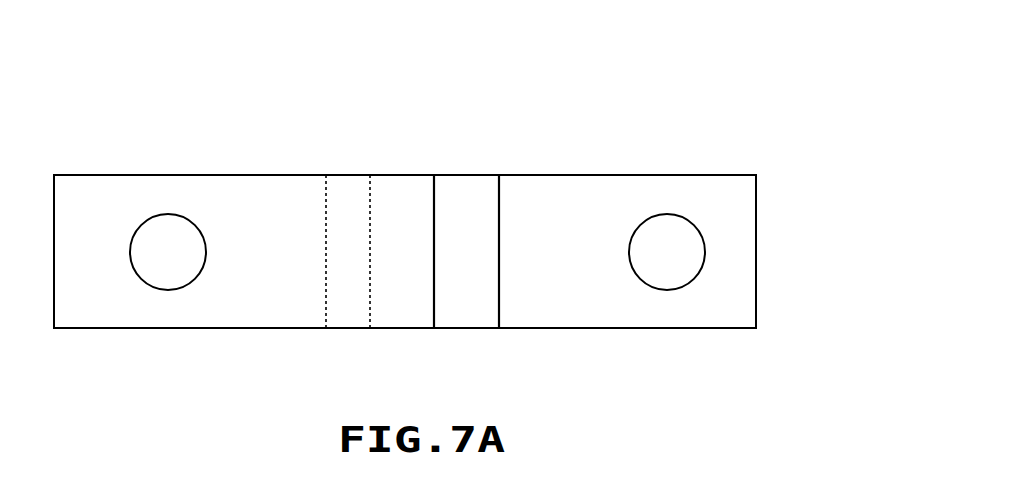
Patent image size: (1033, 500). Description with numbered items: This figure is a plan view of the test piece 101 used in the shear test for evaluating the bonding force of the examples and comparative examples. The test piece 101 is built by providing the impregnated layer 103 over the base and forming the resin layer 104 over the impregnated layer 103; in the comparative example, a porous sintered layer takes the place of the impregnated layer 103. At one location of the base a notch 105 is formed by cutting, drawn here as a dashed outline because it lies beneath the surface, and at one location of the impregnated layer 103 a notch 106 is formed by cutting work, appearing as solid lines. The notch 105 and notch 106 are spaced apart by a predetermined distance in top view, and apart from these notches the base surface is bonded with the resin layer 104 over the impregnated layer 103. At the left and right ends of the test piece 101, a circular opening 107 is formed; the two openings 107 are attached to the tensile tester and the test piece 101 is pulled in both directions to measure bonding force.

The test piece 101 is at (697, 127).
The impregnated layer 103 is at (472, 189).
The resin layer 104 is at (292, 188).
The notch 105 is at (335, 209).
The notch 106 is at (434, 210).
The circular opening 107 is at (152, 279).